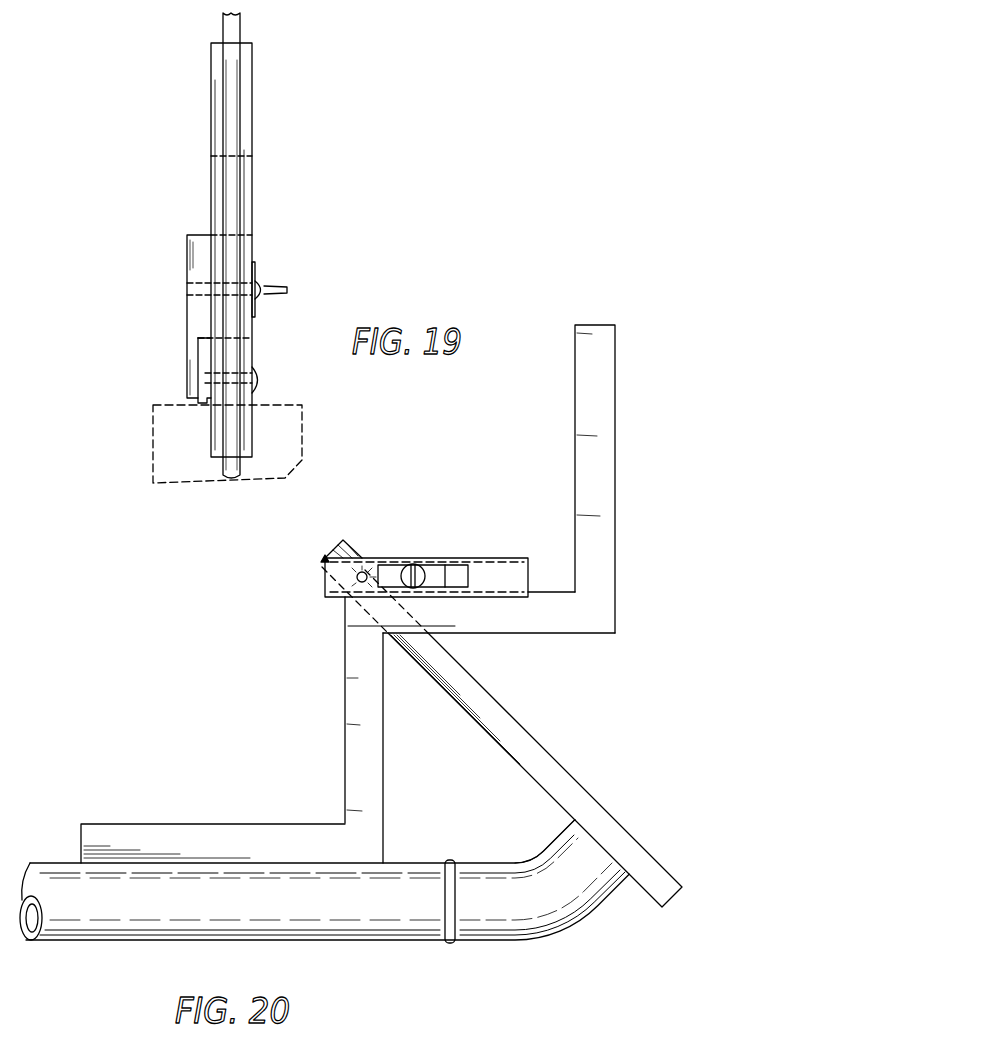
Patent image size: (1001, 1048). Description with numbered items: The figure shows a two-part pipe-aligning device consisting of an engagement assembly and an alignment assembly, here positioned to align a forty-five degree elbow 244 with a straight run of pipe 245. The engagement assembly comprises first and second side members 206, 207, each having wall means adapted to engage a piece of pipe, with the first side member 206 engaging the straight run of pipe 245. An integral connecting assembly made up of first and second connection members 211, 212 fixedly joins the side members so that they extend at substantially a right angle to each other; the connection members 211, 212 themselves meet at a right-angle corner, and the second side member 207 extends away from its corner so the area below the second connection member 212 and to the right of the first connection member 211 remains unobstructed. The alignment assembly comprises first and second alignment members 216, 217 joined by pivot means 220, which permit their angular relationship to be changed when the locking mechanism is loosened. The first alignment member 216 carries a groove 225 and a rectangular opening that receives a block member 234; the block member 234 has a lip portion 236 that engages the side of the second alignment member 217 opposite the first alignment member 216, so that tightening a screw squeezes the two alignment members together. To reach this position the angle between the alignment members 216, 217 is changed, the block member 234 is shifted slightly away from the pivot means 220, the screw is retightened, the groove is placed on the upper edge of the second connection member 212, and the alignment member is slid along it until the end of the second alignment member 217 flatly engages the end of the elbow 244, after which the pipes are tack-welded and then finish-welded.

In FIG. 20, the first side member 206 is at (150, 832).
In FIG. 20, the second side member 207 is at (600, 448).
In FIG. 20, the first connection member 211 is at (355, 745).
In FIG. 20, the second connection member 212 is at (515, 625).
In FIG. 19, the first alignment member 216 is at (212, 440).
In FIG. 20, the first alignment member 216 is at (485, 572).
In FIG. 19, the second alignment member 217 is at (197, 403).
In FIG. 20, the second alignment member 217 is at (527, 770).
In FIG. 19, the pivot means 220 is at (257, 380).
In FIG. 19, the groove 225 is at (230, 430).
In FIG. 19, the block member 234 is at (192, 258).
In FIG. 20, the block member 234 is at (433, 572).
In FIG. 19, the lip portion 236 is at (189, 356).
In FIG. 20, the 45 degree elbow 244 is at (532, 903).
In FIG. 20, the straight run of pipe 245 is at (232, 927).